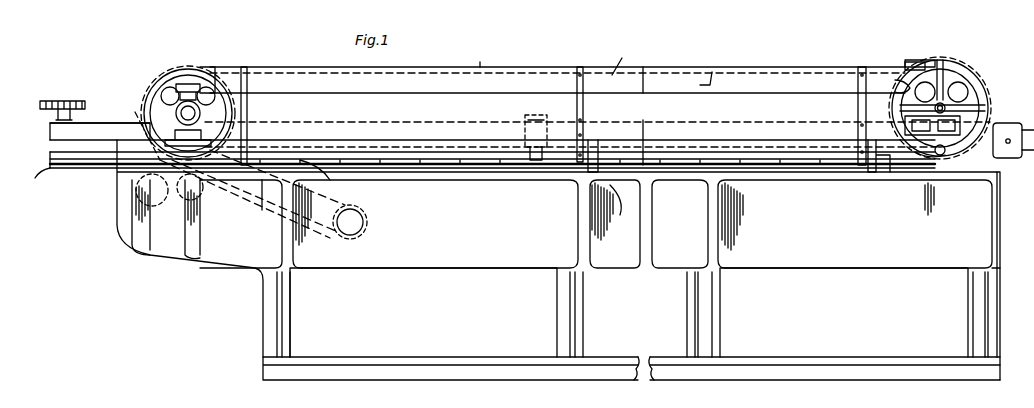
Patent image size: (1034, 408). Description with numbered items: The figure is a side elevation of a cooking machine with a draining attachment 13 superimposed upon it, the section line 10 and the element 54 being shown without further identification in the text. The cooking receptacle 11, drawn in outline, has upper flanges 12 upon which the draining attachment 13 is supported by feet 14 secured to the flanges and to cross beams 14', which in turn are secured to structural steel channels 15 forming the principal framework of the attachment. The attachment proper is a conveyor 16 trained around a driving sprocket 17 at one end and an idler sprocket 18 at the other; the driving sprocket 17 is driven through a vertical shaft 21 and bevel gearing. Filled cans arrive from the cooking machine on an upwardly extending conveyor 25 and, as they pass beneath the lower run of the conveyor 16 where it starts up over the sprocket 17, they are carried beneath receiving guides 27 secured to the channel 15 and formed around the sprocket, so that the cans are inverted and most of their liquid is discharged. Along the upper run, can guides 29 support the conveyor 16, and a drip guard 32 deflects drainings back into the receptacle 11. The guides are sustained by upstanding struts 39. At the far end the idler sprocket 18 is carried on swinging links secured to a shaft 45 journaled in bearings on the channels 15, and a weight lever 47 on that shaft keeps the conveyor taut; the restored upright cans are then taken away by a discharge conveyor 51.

The section line 10 is at (282, 42).
The cooking receptacle 11 is at (975, 235).
The upper flanges 12 is at (792, 178).
The draining attachment 13 is at (548, 30).
The feet 14 is at (763, 205).
The cross beams 14' is at (931, 154).
The structural steel channels 15 is at (200, 30).
The conveyor 16 is at (76, 22).
The driving sprocket 17 is at (204, 72).
The idler sprocket 18 is at (952, 78).
The vertical shaft 21 is at (176, 112).
The upwardly extending conveyor 25 is at (340, 208).
The receiving guides 27 is at (166, 72).
The can guides 29 is at (608, 78).
The drip guard 32 is at (712, 72).
The upstanding struts 39 is at (583, 108).
The shaft 45 is at (950, 152).
The weight lever 47 is at (1005, 124).
The discharge conveyor 51 is at (48, 170).
The gear 54 is at (50, 92).